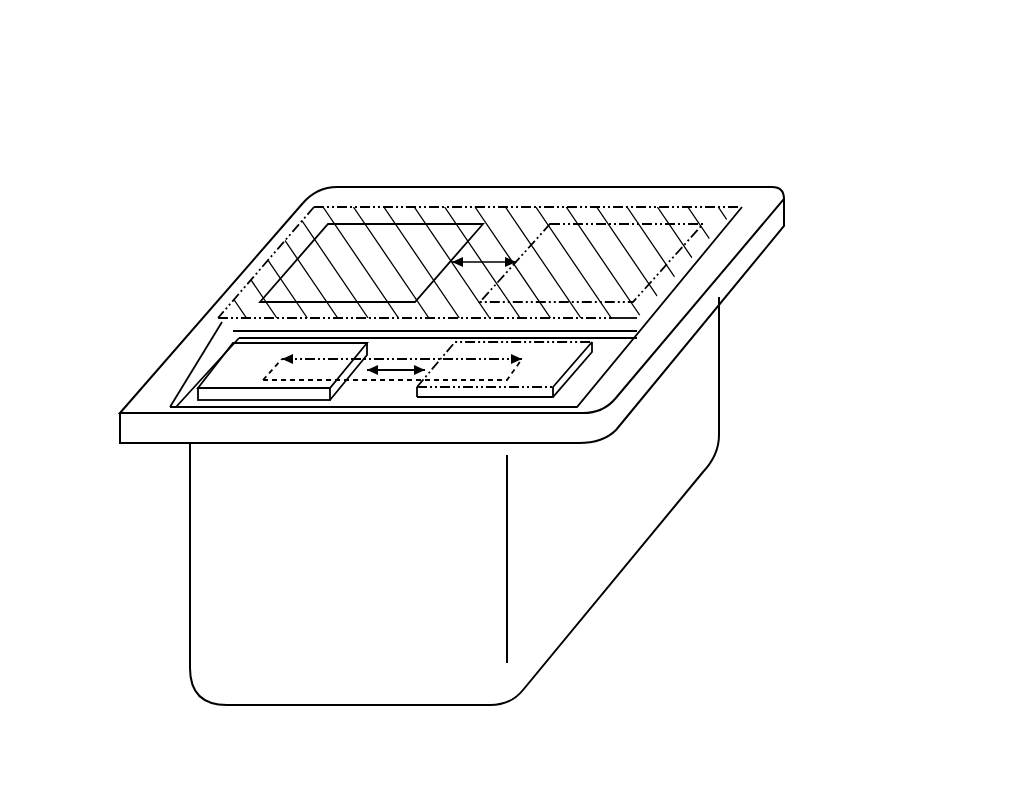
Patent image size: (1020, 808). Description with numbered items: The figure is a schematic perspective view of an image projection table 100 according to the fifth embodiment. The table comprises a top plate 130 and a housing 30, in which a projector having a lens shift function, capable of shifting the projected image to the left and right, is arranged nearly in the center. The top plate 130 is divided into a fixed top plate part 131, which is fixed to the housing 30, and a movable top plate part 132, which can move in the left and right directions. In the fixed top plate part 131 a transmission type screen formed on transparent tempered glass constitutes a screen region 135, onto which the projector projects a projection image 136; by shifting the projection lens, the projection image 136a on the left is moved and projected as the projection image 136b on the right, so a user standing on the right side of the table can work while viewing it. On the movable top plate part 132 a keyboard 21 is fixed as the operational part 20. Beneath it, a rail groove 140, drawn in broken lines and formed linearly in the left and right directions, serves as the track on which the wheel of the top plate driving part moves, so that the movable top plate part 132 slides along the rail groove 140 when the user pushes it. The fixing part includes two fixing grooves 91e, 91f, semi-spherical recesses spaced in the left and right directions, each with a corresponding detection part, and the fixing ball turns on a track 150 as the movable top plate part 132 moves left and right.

The image projection table 100 is at (591, 74).
The operational part 20 is at (135, 288).
The keyboard 21 is at (215, 352).
The housing 30 is at (705, 384).
The top plate 130 is at (757, 187).
The fixed top plate part 131 is at (333, 193).
The movable top plate part 132 is at (226, 336).
The screen region 135 is at (526, 214).
The projection image 136 is at (433, 117).
The projection image on the left 136a is at (410, 215).
The projection image on the right 136b is at (634, 212).
The rail groove 140 is at (313, 383).
The track 150 is at (452, 385).
The fixing groove 91e is at (282, 360).
The fixing groove 91f is at (520, 361).